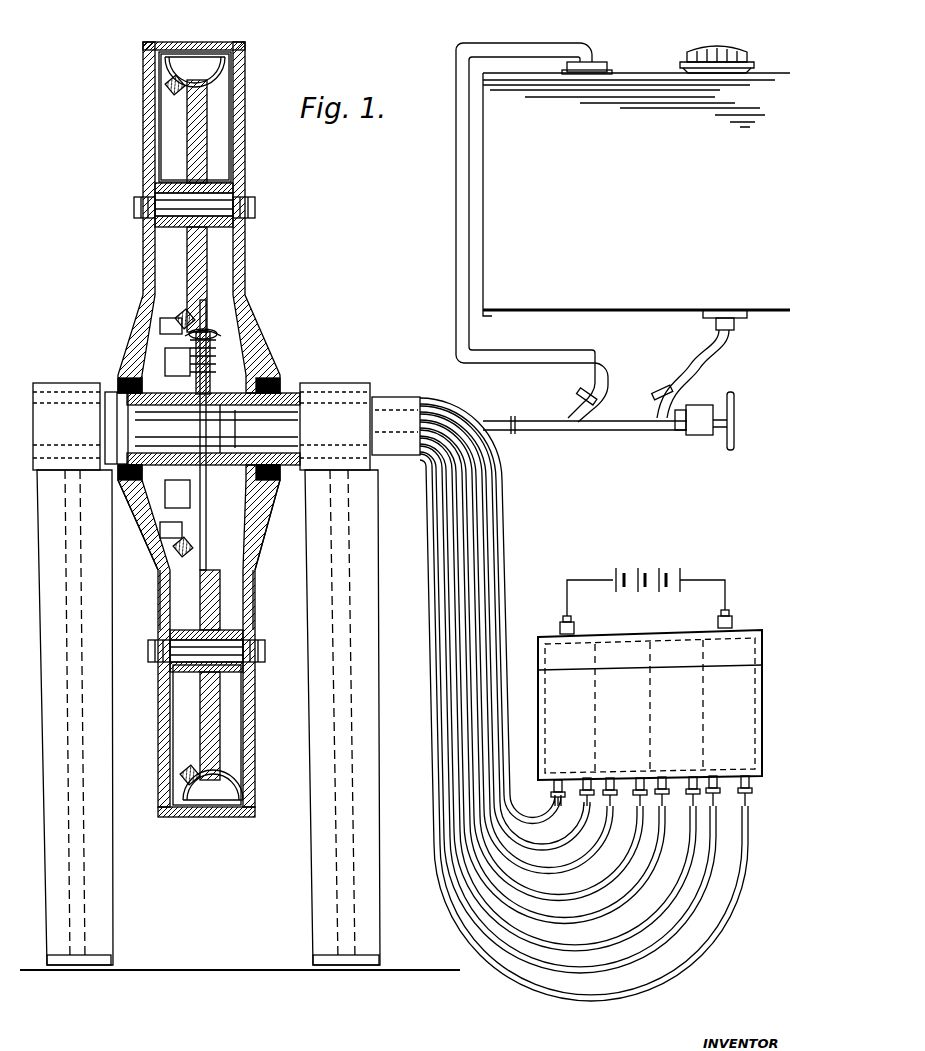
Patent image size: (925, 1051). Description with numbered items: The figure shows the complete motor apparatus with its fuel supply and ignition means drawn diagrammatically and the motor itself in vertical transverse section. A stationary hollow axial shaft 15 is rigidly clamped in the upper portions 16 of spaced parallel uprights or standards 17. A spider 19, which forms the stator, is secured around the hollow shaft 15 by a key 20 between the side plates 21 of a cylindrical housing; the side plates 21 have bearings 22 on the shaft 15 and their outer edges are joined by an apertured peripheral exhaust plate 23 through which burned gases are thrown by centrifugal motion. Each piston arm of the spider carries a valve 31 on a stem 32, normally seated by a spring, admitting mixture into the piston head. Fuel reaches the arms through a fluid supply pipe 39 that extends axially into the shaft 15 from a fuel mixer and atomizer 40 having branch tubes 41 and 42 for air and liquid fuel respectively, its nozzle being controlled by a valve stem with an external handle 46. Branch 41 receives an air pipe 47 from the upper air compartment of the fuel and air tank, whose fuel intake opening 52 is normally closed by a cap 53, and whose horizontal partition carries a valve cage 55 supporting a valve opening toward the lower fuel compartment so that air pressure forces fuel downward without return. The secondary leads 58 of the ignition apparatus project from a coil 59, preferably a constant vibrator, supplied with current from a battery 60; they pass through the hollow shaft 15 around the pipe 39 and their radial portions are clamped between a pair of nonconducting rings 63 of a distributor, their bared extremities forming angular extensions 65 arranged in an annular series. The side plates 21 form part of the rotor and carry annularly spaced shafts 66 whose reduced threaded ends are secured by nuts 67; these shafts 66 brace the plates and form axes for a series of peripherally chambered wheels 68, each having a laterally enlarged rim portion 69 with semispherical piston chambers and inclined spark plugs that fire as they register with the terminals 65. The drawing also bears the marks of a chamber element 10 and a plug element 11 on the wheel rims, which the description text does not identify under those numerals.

The cup 10 is at (192, 68).
The set screw 11 is at (170, 92).
The hollow axial shaft 15 is at (398, 404).
The upper portions of standards 16 is at (66, 395).
The uprights or standards 17 is at (98, 868).
The spider 19 is at (257, 378).
The key 20 is at (232, 470).
The side plates 21 is at (158, 582).
The bearings 22 is at (135, 378).
The apertured peripheral exhaust plate 23 is at (212, 815).
The valve 31 is at (232, 330).
The stem 32 is at (218, 335).
The fluid supply pipe 39 is at (517, 432).
The fuel mixer and atomizer 40 is at (620, 431).
The branch tube for air 41 is at (578, 398).
The branch tube for liquid fuel 42 is at (660, 398).
The handle 46 is at (732, 398).
The air pipe 47 is at (456, 245).
The fuel intake opening 52 is at (720, 74).
The cap 53 is at (700, 45).
The valve cage 55 is at (202, 435).
The secondary leads 58 is at (488, 582).
The coil 59 is at (752, 738).
The battery 60 is at (662, 575).
The rings 63 is at (165, 500).
The angular extensions 65 is at (160, 326).
The shafts 66 is at (228, 200).
The nuts 67 is at (252, 210).
The peripherally chambered wheels 68 is at (190, 145).
The rim portion 69 is at (220, 95).